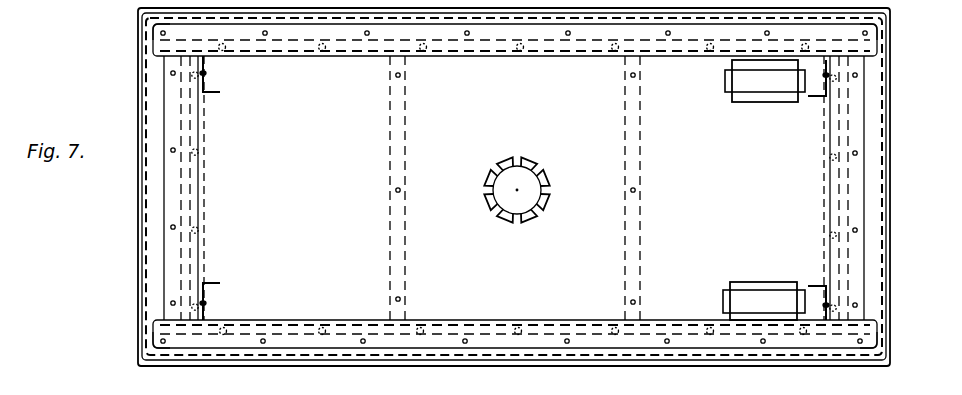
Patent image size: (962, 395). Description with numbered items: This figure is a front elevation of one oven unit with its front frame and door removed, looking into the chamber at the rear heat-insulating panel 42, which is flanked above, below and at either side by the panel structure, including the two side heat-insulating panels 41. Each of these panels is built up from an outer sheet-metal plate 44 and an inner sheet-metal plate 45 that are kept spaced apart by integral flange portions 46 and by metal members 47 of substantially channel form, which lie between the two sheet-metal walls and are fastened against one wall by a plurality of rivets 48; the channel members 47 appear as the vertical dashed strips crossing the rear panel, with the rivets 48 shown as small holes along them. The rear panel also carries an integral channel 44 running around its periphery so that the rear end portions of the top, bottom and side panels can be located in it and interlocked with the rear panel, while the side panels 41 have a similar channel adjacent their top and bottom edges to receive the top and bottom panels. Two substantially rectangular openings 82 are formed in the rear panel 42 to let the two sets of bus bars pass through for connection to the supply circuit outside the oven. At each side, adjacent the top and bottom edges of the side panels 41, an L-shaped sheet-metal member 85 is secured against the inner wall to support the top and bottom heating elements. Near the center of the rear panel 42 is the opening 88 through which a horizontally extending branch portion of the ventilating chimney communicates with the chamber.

The side heat-insulating panel 41 is at (168, 208).
The rear heat-insulating panel 42 is at (807, 237).
The outer sheet-metal plate 44 is at (462, 22).
The inner sheet-metal plate 45 is at (463, 58).
The integral flange portion 46 is at (153, 27).
The metal member of channel form 47 is at (406, 220).
The rivet 48 is at (396, 77).
The opening 82 is at (760, 85).
The sheet-metal member 85 is at (215, 93).
The opening 88 is at (523, 184).